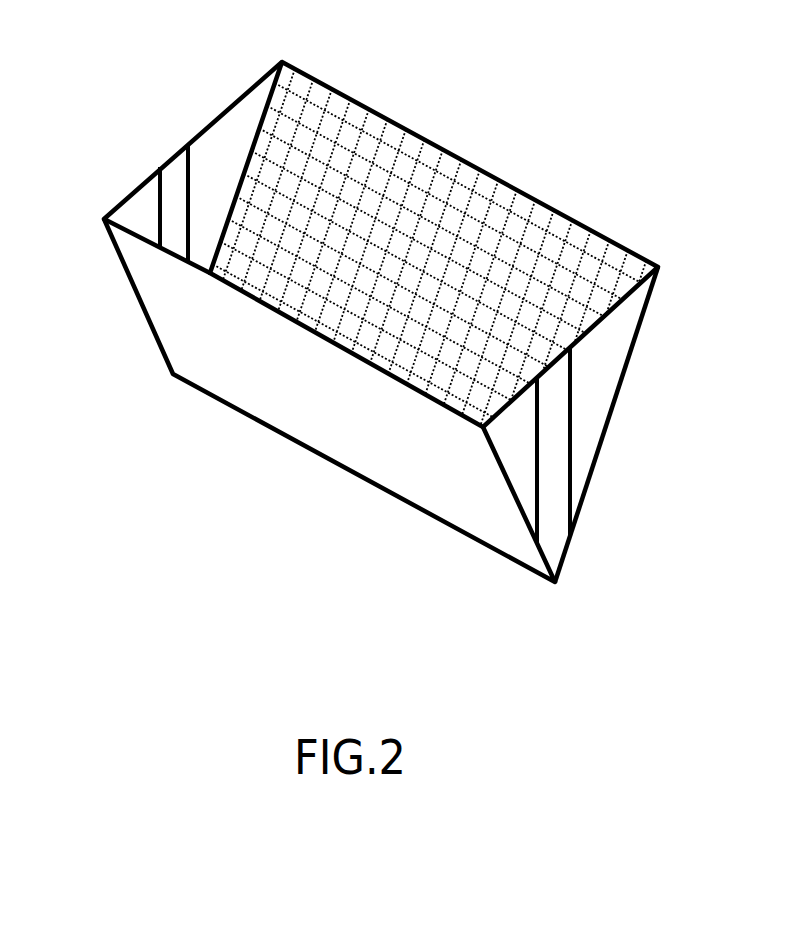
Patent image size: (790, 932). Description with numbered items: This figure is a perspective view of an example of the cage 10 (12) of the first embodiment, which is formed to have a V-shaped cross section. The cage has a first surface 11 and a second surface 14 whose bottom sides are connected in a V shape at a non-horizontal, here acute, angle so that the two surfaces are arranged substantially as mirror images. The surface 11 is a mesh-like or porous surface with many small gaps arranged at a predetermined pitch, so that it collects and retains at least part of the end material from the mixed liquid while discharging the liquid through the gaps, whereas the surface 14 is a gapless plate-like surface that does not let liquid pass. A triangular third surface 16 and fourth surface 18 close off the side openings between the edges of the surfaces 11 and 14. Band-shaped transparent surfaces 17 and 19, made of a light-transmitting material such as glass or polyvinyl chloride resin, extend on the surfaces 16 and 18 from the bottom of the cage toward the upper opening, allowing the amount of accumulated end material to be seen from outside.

The cage 10 is at (204, 95).
The cage 12 is at (371, 302).
The first surface 11 is at (390, 152).
The second surface 14 is at (243, 398).
The third surface 16 is at (142, 213).
The transparent surface 17 is at (178, 177).
The fourth surface 18 is at (603, 397).
The transparent surface 19 is at (557, 503).